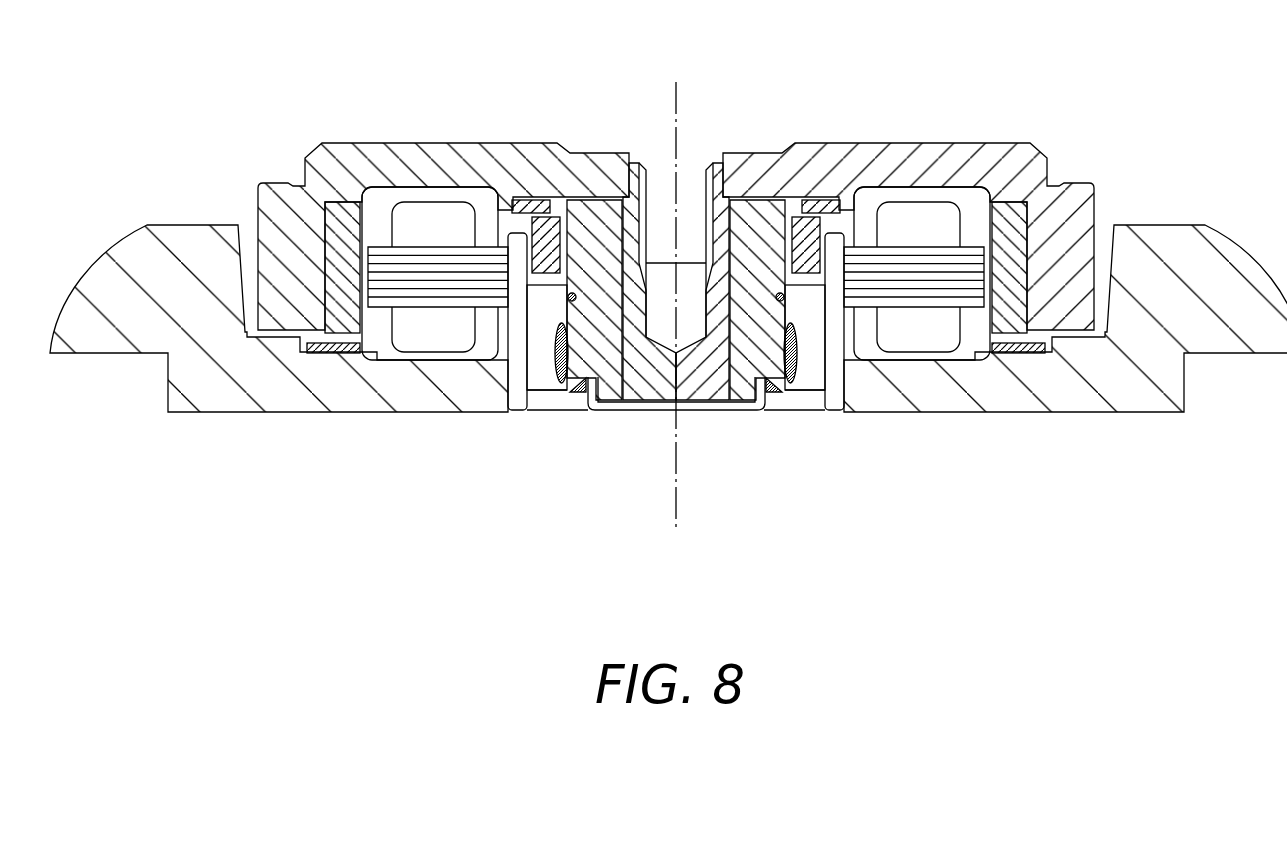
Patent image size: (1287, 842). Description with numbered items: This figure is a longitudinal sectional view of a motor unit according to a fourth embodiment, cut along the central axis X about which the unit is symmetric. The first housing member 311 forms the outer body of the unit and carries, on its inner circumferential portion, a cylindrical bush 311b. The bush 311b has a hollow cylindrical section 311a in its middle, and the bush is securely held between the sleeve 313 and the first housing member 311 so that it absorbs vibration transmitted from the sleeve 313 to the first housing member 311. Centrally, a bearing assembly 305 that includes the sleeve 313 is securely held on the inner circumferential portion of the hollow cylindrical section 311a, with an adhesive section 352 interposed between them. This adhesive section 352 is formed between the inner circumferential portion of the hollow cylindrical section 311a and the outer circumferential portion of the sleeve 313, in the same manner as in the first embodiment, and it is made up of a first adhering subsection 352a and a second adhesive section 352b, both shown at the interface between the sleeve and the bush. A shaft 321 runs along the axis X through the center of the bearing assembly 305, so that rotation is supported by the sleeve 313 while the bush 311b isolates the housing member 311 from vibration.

The bearing assembly 305 is at (787, 440).
The first housing member 311 is at (668, 379).
The hollow cylindrical section 311a is at (812, 308).
The cylindrical bush 311b is at (812, 383).
The sleeve 313 is at (752, 353).
The shaft 321 is at (720, 158).
The adhesive section 352 is at (602, 433).
The first adhering subsection 352a is at (570, 301).
The second adhesive section 352b is at (557, 345).
The rotation axis X is at (675, 143).